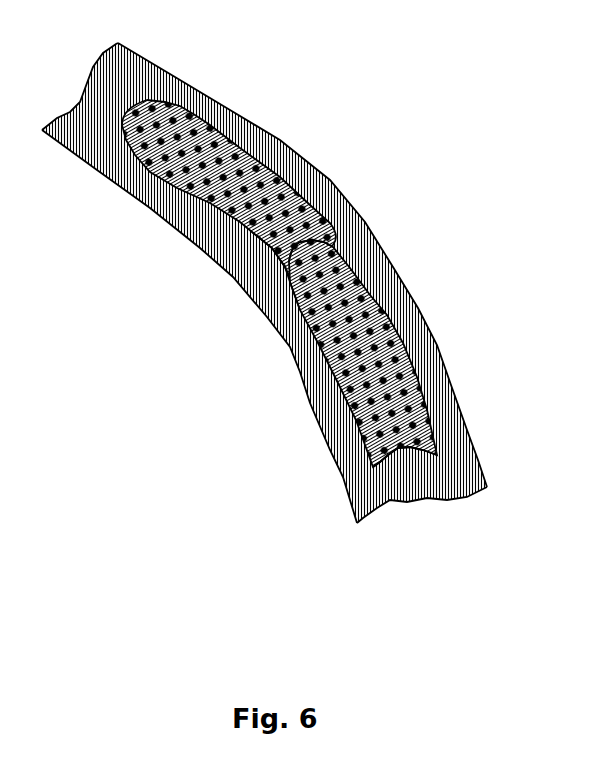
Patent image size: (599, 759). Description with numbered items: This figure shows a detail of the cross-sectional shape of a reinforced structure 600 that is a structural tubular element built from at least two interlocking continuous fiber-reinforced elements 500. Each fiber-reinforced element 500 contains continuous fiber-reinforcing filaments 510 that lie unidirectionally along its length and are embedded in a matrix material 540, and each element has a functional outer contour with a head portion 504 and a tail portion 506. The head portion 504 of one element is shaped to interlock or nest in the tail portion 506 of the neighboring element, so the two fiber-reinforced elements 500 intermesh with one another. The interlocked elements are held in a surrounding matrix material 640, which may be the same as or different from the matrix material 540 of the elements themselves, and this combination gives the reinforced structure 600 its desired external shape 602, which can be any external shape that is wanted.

The reinforced structure 600 is at (387, 195).
The desired external shape 602 is at (243, 118).
The matrix material 640 is at (142, 185).
The continuous fiber-reinforced interlocking element 500 is at (273, 180).
The matrix material 540 is at (357, 277).
The tail portion 506 is at (298, 243).
The head portion 504 is at (287, 278).
The continuous fiber-reinforcing filaments 510 is at (367, 410).